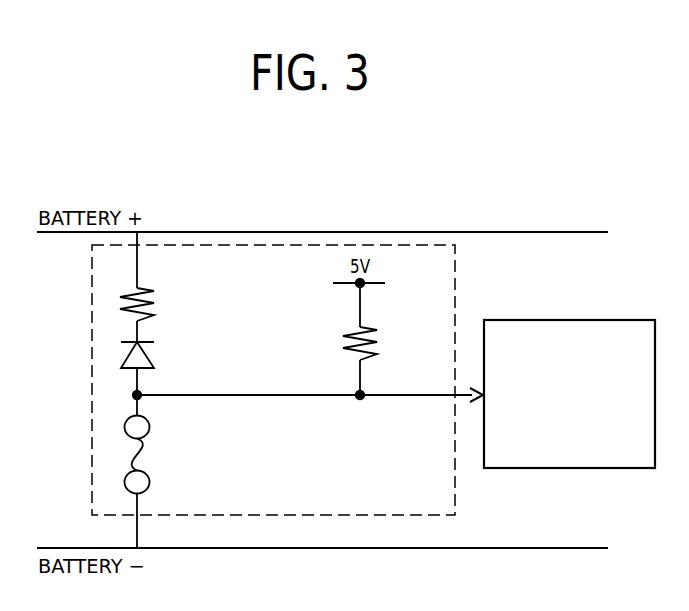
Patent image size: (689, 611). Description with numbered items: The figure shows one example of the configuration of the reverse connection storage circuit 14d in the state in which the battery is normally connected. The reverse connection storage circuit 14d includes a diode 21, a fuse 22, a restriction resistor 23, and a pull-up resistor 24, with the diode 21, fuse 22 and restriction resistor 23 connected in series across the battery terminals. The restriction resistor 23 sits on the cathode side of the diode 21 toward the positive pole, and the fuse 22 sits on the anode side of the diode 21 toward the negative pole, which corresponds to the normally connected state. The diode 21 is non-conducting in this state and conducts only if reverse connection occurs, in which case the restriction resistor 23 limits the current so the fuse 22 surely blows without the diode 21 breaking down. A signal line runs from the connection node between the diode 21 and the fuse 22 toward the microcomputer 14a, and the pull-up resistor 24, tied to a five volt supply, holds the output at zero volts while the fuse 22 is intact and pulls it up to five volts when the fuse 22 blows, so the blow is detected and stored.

The microcomputer 14a is at (597, 320).
The reverse connection storage circuit 14d is at (455, 303).
The diode 21 is at (165, 357).
The fuse 22 is at (165, 450).
The restriction resistor 23 is at (165, 297).
The pull-up resistor 24 is at (382, 337).